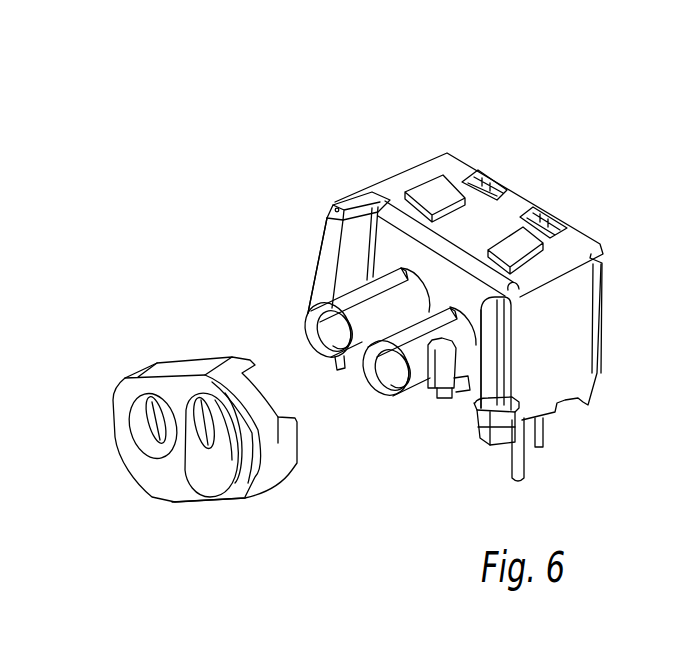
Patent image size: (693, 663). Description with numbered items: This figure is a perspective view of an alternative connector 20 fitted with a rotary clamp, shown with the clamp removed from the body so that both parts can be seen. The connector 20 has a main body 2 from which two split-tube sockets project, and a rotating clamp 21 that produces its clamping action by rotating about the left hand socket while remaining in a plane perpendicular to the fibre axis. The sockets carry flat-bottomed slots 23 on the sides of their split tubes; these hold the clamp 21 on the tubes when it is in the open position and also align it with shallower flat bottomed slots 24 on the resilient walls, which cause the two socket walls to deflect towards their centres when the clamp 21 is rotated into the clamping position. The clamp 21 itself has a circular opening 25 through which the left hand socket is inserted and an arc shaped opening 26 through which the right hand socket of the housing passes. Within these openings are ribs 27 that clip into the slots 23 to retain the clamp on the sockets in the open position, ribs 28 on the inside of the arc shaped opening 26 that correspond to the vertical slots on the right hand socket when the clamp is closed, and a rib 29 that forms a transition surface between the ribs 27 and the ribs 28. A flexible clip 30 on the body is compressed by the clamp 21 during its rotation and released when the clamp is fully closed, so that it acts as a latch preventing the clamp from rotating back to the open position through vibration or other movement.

The connector 20 is at (257, 118).
The main body 2 is at (492, 177).
The rotating clamp 21 is at (122, 420).
The flat-bottomed slots 23 is at (418, 344).
The flat bottomed slots 24 is at (362, 356).
The circular opening 25 is at (150, 435).
The arc shaped opening 26 is at (217, 483).
The ribs 27 is at (228, 405).
The ribs 28 is at (238, 413).
The rib 29 is at (215, 417).
The flexible clip 30 is at (457, 395).